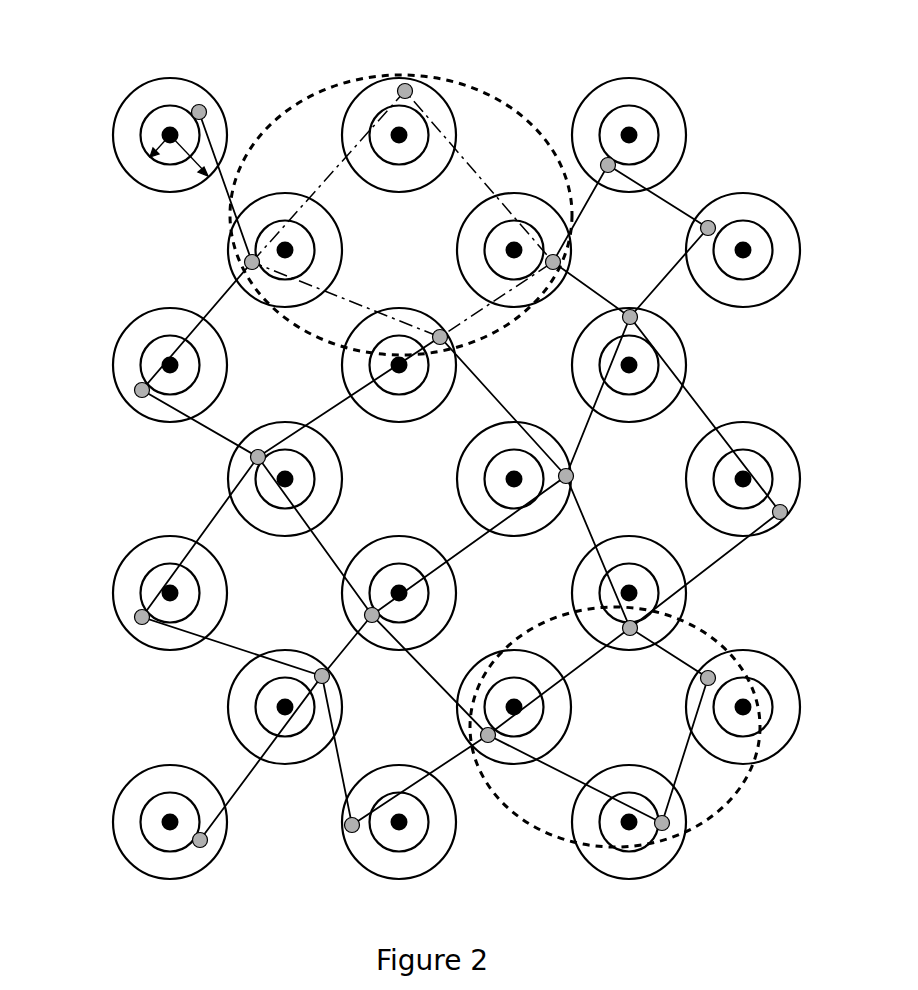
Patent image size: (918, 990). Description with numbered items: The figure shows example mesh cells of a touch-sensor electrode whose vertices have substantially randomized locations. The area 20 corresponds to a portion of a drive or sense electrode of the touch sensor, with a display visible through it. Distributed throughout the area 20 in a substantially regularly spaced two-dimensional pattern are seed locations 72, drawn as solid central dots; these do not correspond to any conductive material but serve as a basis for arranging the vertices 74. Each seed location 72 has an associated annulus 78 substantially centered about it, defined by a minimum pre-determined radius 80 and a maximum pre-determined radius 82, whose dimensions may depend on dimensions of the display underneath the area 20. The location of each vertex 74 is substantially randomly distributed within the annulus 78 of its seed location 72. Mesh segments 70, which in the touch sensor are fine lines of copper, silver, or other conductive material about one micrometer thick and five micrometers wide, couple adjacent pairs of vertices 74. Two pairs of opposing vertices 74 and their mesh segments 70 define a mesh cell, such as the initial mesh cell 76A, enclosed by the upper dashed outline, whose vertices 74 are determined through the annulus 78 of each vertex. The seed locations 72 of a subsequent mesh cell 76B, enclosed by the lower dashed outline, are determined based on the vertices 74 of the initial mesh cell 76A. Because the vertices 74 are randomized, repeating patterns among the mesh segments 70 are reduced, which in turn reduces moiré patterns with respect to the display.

The area 20 is at (524, 62).
The mesh segment 70 is at (483, 183).
The seed location 72 is at (512, 485).
The vertex 74 is at (136, 384).
The initial mesh cell 76A is at (343, 352).
The subsequent mesh cell 76B is at (552, 838).
The annulus 78 is at (582, 362).
The minimum pre-determined radius 80 is at (140, 136).
The maximum pre-determined radius 82 is at (197, 162).